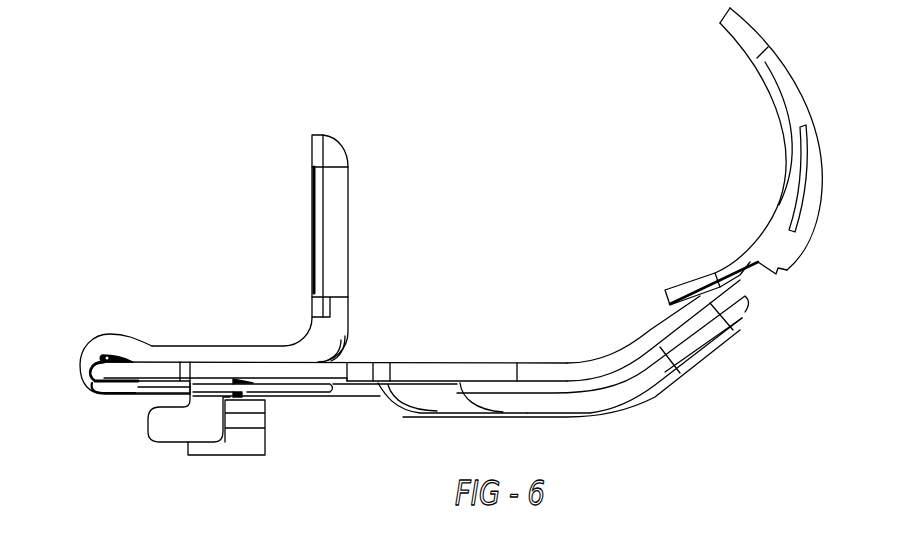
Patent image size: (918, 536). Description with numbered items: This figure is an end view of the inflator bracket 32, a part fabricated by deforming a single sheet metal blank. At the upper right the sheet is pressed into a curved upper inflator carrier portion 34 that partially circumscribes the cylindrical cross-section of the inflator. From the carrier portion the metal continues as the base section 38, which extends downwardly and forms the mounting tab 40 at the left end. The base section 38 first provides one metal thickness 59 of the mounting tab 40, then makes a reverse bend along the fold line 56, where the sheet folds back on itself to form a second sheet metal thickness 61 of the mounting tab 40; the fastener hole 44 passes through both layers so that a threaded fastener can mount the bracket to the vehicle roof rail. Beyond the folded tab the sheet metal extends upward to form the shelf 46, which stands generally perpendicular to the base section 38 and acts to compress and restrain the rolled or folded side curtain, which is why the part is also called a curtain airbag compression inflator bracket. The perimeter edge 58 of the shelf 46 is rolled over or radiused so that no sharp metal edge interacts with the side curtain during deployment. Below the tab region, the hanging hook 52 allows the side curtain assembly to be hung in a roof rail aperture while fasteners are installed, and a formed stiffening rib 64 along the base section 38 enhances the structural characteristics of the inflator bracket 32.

The inflator bracket 32 is at (449, 192).
The upper inflator carrier portion 34 is at (773, 98).
The base section 38 is at (457, 363).
The mounting tab 40 is at (155, 345).
The fastener hole 44 is at (236, 392).
The shelf 46 is at (352, 178).
The hanging hook 52 is at (166, 430).
The fold line 56 is at (80, 348).
The perimeter edge 58 is at (340, 137).
The first metal thickness 59 is at (278, 379).
The second sheet metal thickness 61 is at (177, 347).
The stiffening rib 64 is at (672, 382).